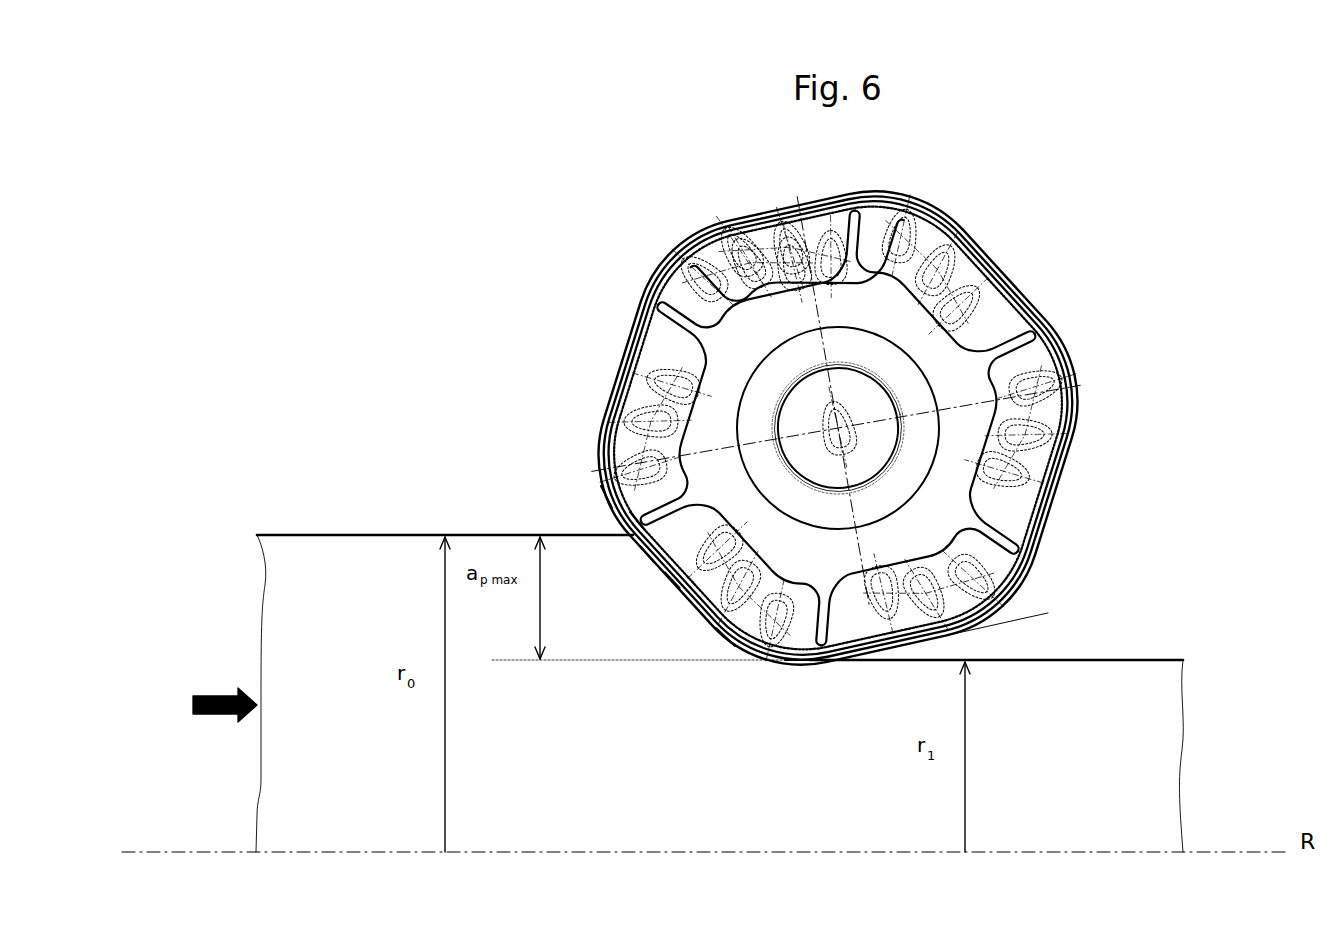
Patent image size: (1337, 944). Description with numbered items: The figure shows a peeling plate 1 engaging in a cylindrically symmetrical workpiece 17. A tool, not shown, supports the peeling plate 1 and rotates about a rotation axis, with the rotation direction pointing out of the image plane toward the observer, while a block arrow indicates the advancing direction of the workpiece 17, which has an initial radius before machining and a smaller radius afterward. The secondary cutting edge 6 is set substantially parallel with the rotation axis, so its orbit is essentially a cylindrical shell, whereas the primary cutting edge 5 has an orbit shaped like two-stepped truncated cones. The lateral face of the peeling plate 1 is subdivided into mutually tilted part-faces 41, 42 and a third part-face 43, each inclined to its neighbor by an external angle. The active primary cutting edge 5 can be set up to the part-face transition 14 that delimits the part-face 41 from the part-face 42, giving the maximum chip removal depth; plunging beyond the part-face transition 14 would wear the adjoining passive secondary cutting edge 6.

The peeling plate 1 is at (1121, 306).
The part-face 41 is at (607, 498).
The part-face transition 14 is at (637, 522).
The part-face 42 is at (647, 554).
The primary cutting edge 5 is at (672, 580).
The third part-face 43 is at (725, 638).
The secondary cutting edge 6 is at (797, 661).
The workpiece 17 is at (651, 806).